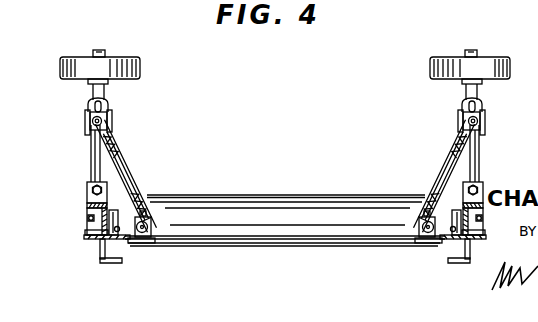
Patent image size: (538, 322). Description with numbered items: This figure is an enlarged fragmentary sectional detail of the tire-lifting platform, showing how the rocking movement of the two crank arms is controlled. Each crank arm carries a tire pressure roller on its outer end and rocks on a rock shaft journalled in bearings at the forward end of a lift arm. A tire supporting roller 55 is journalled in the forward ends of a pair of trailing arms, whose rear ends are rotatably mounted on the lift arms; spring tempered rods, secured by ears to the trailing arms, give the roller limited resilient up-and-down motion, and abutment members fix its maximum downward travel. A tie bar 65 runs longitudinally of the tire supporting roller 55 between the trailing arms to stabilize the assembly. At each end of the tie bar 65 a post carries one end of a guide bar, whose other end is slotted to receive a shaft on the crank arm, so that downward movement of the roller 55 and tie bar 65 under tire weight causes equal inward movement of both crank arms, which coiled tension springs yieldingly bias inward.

The tire supporting roller 55 is at (272, 210).
The tie bar 65 is at (268, 247).